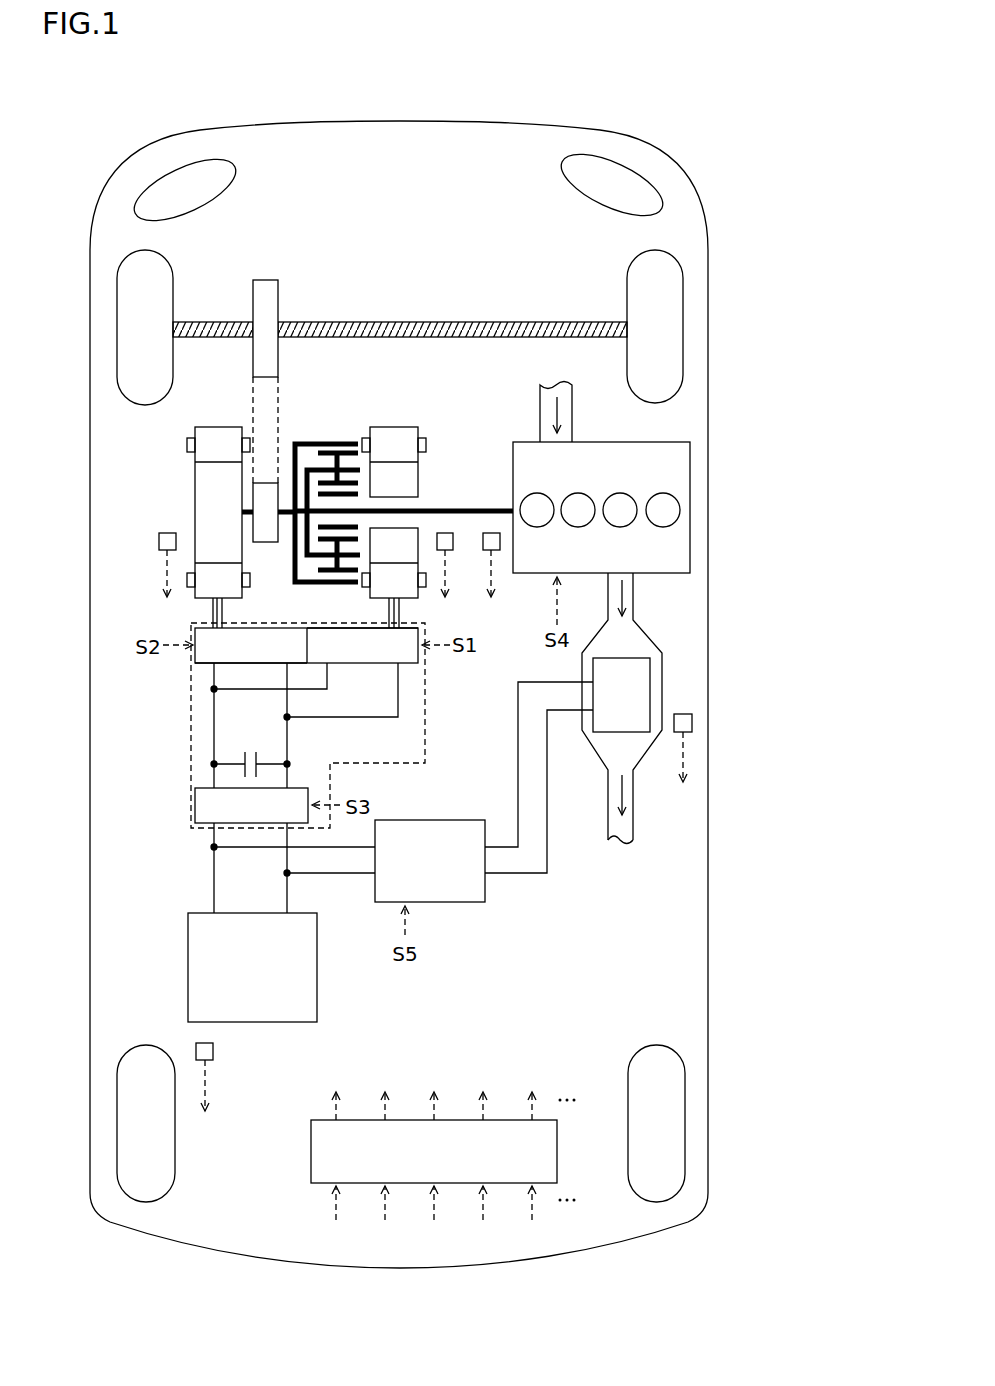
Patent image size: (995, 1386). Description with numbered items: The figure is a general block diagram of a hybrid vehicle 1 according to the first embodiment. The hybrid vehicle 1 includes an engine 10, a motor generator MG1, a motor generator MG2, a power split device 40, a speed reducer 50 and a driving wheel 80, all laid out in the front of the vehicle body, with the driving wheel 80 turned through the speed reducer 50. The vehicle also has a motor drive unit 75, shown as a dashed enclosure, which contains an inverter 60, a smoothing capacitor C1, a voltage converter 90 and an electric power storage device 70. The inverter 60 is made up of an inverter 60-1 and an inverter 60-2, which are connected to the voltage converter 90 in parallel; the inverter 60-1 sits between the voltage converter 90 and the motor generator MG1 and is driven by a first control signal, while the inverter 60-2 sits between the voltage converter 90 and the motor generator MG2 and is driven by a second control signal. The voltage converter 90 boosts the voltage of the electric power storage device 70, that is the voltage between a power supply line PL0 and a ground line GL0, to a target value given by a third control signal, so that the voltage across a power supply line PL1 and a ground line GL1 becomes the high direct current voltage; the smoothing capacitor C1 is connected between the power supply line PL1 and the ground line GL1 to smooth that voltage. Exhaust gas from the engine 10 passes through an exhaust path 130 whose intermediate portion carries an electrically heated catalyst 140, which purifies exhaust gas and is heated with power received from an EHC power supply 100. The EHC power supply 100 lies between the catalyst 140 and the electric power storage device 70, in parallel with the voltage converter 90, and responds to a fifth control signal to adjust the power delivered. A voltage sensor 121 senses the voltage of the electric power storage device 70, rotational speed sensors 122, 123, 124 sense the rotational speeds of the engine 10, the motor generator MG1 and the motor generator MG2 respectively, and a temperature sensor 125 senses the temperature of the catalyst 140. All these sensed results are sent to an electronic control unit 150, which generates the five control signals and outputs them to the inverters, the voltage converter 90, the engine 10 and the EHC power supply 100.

The hybrid vehicle 1 is at (128, 78).
The engine 10 is at (690, 555).
The power split device 40 is at (328, 442).
The speed reducer 50 is at (265, 275).
The inverter 60 is at (194, 673).
The inverter 60-1 is at (339, 623).
The inverter 60-2 is at (262, 623).
The electric power storage device 70 is at (188, 935).
The motor drive unit 75 is at (425, 707).
The driving wheel 80 is at (683, 333).
The voltage converter 90 is at (195, 805).
The EHC power supply 100 is at (445, 820).
The voltage sensor 121 is at (203, 1043).
The rotational speed sensor 122 is at (491, 533).
The rotational speed sensor 123 is at (445, 533).
The rotational speed sensor 124 is at (167, 533).
The temperature sensor 125 is at (692, 722).
The exhaust path 130 is at (632, 592).
The electrical heated catalyst (EHC) 140 is at (650, 675).
The electronic control unit (ECU) 150 is at (311, 1153).
The motor generator MG1 is at (392, 427).
The motor generator MG2 is at (218, 427).
The smoothing capacitor C1 is at (252, 745).
The power supply line PL1 is at (214, 712).
The ground line GL1 is at (287, 738).
The power supply line PL0 is at (214, 890).
The ground line GL0 is at (287, 893).